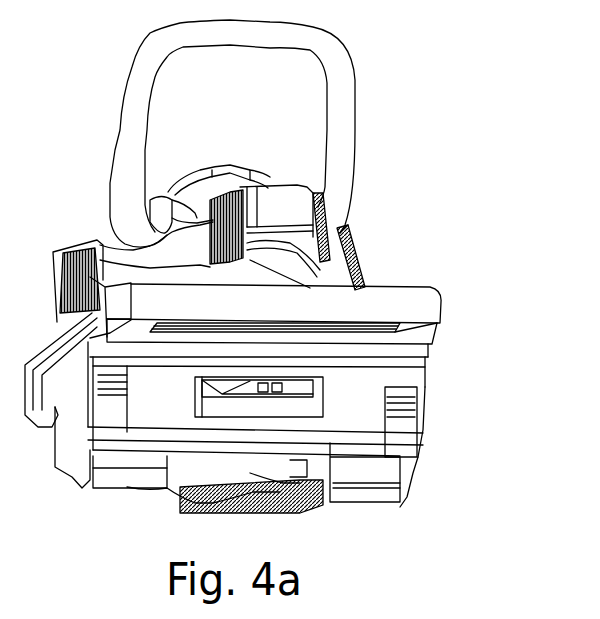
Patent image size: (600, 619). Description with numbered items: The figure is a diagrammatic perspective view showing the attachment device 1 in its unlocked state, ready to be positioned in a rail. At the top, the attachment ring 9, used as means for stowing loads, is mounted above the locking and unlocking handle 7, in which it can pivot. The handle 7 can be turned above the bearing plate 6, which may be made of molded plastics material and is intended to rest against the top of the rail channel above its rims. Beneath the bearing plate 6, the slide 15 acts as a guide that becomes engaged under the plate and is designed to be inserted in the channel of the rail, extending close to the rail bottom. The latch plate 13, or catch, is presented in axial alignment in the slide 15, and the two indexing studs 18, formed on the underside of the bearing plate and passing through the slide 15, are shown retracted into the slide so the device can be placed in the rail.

The attachment device 1 is at (424, 114).
The attachment ring 9 is at (140, 88).
The locking and unlocking handle 7 is at (347, 250).
The bearing plate 6 is at (393, 303).
The latch plate 13 is at (283, 405).
The slide 15 is at (360, 428).
The indexing studs 18 is at (153, 450).